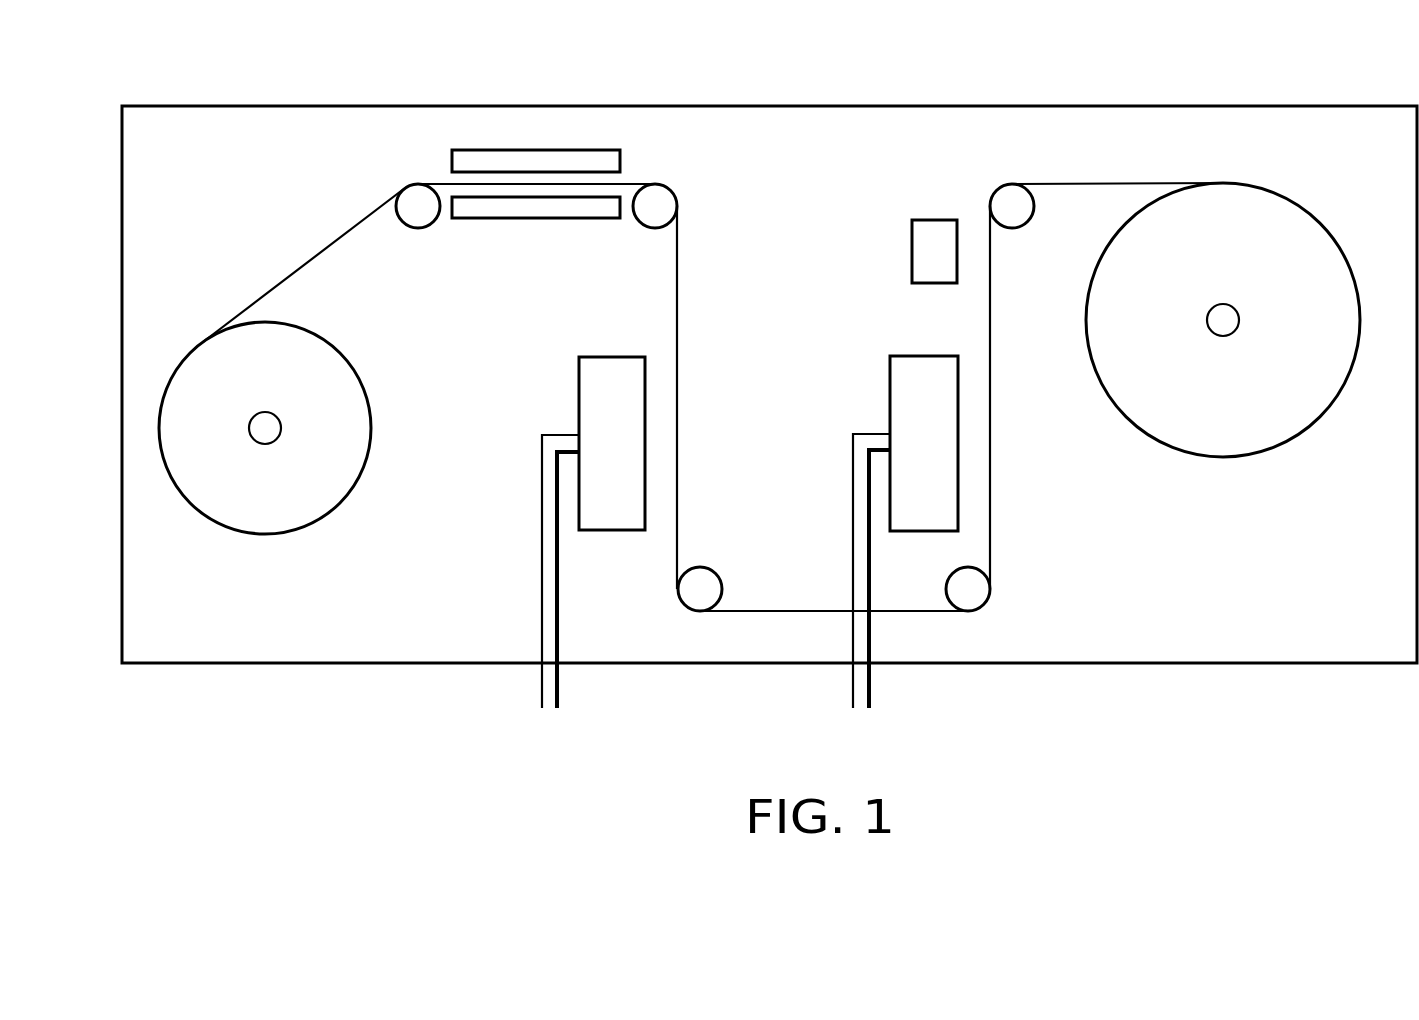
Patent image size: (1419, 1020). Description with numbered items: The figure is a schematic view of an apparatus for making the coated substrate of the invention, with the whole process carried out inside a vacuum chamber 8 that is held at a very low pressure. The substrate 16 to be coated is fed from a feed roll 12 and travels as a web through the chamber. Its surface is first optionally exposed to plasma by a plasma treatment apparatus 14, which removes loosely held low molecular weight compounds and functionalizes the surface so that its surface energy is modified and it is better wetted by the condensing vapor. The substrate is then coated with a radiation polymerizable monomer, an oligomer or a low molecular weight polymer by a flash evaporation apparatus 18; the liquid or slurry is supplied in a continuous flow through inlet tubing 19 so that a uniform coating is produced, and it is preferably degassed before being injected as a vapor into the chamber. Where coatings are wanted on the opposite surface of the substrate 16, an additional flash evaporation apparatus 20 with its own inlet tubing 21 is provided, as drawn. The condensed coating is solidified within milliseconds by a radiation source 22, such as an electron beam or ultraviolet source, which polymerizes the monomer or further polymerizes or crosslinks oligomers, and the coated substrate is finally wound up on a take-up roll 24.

The vacuum chamber 8 is at (1123, 105).
The feed roll 12 is at (262, 534).
The plasma treatment apparatus 14 is at (500, 219).
The substrate 16 is at (679, 318).
The flash evaporation apparatus 18 is at (605, 356).
The inlet tubing 19 is at (543, 688).
The additional flash evaporation apparatus 20 is at (903, 356).
The additional flash evaporation apparatus inlet tubing 21 is at (853, 688).
The radiation source 22 is at (920, 219).
The take-up roll 24 is at (1223, 459).